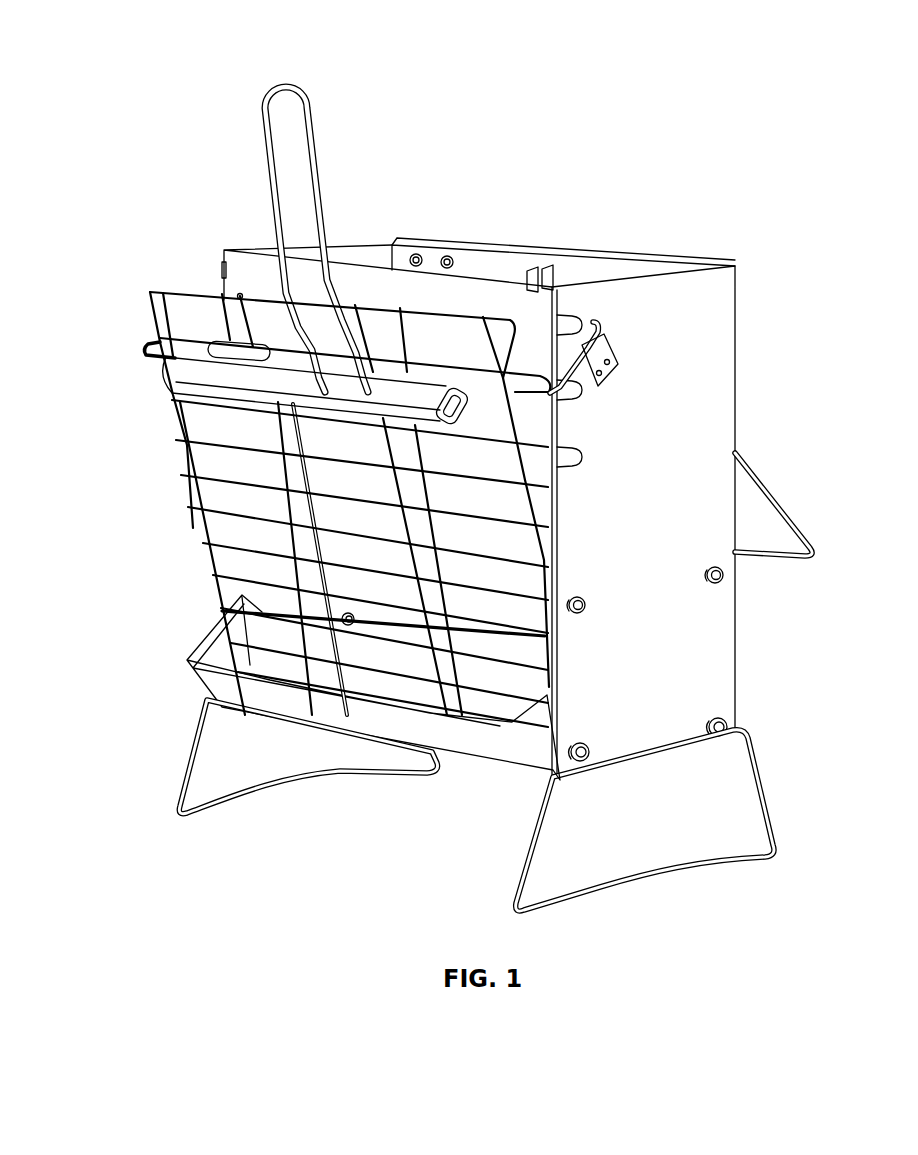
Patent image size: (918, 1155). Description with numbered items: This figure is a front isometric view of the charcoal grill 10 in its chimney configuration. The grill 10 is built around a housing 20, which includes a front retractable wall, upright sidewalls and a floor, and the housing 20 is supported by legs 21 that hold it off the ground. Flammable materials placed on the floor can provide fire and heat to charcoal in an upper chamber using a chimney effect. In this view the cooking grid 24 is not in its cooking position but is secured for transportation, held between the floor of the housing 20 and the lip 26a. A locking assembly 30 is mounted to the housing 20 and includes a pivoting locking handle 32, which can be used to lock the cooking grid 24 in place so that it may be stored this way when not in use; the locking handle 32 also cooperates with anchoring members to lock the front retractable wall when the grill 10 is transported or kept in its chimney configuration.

The grill 10 is at (712, 91).
The housing 20 is at (738, 390).
The legs 21 is at (205, 812).
The cooking grid 24 is at (152, 283).
The lip 26a is at (236, 692).
The locking assembly 30 is at (608, 352).
The locking handle 32 is at (190, 376).